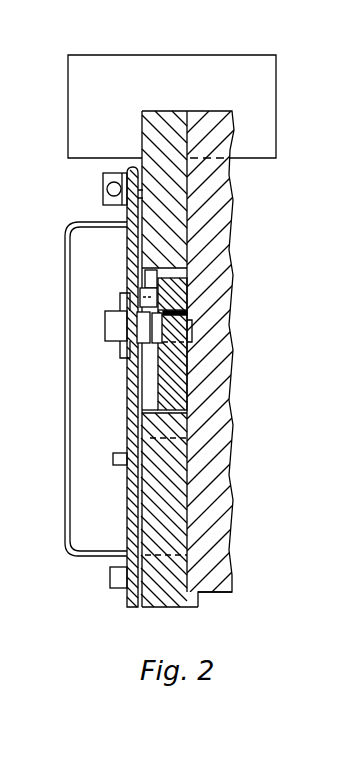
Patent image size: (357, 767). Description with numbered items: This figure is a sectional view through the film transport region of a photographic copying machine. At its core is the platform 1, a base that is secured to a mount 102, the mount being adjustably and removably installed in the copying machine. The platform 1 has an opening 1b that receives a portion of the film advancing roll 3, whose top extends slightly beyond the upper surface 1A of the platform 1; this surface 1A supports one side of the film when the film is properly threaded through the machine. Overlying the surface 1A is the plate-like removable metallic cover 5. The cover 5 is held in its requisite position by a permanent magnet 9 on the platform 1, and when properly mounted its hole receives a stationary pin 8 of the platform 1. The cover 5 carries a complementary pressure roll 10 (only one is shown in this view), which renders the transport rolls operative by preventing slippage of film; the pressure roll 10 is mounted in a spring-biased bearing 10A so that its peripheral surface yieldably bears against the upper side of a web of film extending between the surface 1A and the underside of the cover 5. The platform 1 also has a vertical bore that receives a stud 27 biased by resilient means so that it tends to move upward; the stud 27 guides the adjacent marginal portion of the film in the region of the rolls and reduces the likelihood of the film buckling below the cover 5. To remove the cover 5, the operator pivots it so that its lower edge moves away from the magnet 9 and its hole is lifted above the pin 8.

The platform 1 is at (165, 118).
The upper surface 1A is at (157, 365).
The opening 1b is at (188, 328).
The film advancing roll 3 is at (160, 353).
The cover 5 is at (130, 253).
The stationary pin 8 is at (118, 460).
The permanent magnet 9 is at (138, 507).
The pressure roll 10 is at (122, 327).
The spring-biased bearing 10A is at (123, 300).
The stud 27 is at (152, 280).
The mount 102 is at (223, 596).